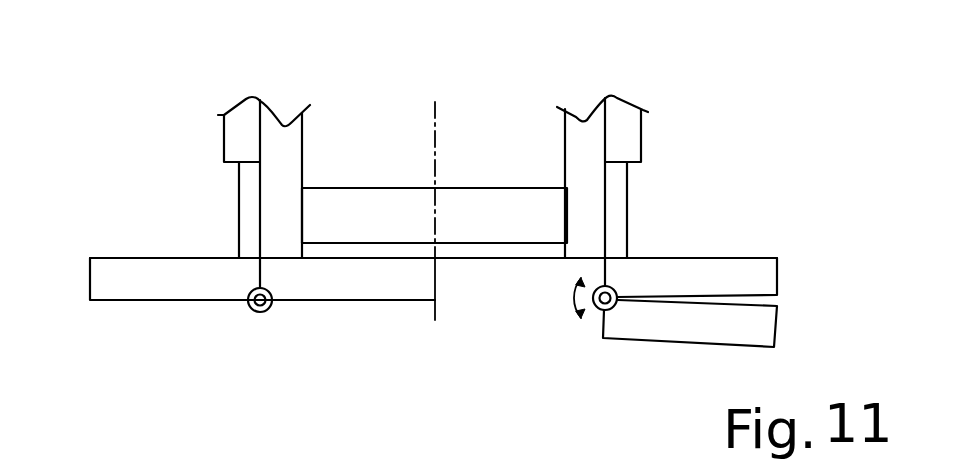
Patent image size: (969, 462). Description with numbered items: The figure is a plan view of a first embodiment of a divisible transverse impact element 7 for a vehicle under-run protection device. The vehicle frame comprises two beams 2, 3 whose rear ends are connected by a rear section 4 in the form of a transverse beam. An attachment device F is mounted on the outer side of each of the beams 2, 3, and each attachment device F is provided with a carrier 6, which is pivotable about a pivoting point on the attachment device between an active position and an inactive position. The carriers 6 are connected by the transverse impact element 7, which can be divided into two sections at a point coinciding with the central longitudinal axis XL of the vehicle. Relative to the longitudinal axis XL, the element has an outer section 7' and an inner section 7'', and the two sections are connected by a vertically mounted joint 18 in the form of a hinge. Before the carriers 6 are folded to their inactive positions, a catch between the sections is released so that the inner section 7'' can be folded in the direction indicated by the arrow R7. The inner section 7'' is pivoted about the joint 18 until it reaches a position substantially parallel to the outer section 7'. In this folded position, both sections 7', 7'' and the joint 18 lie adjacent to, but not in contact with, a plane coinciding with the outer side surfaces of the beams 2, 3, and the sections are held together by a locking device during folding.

The beam 2 is at (283, 128).
The beam 3 is at (582, 128).
The rear section 4 is at (397, 231).
The carrier 6 is at (247, 222).
The transverse impact element 7 is at (428, 341).
The outer section 7' is at (746, 259).
The inner section 7'' is at (741, 311).
The joint 18 is at (255, 312).
The attachment device F is at (224, 146).
The central longitudinal axis XL is at (438, 214).
The folding direction arrow R7 is at (567, 298).